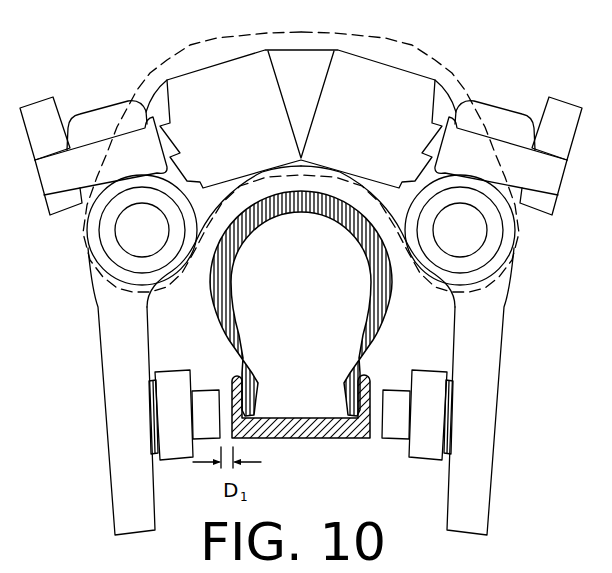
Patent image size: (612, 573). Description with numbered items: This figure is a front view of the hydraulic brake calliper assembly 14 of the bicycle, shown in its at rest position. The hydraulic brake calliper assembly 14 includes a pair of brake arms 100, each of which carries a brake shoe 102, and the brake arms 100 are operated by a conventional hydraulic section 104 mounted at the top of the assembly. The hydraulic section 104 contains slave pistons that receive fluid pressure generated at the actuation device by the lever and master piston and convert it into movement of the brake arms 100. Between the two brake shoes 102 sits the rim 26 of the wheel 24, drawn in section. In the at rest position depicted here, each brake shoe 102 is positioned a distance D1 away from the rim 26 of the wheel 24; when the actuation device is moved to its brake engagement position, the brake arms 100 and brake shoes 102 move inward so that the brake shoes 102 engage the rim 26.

The hydraulic brake calliper assembly 14 is at (151, 51).
The wheel 24 is at (218, 318).
The rim 26 is at (298, 440).
The brake arms 100 is at (117, 420).
The brake shoe 102 is at (206, 400).
The hydraulic section 104 is at (349, 88).